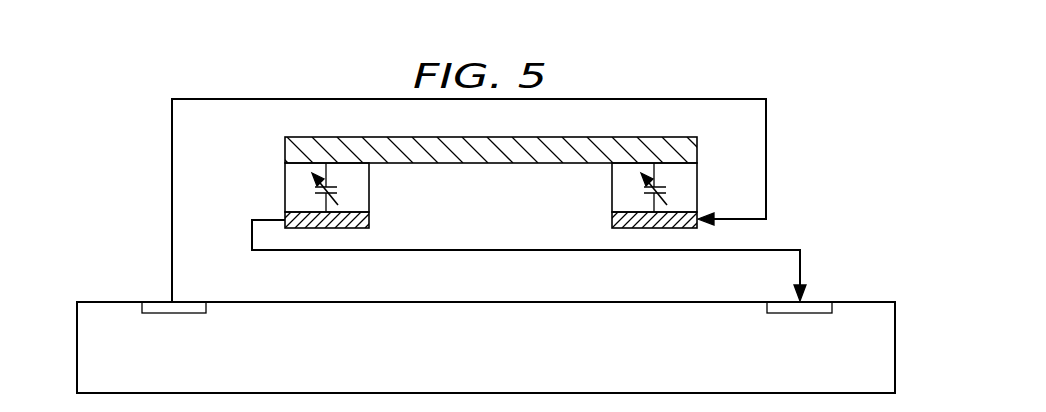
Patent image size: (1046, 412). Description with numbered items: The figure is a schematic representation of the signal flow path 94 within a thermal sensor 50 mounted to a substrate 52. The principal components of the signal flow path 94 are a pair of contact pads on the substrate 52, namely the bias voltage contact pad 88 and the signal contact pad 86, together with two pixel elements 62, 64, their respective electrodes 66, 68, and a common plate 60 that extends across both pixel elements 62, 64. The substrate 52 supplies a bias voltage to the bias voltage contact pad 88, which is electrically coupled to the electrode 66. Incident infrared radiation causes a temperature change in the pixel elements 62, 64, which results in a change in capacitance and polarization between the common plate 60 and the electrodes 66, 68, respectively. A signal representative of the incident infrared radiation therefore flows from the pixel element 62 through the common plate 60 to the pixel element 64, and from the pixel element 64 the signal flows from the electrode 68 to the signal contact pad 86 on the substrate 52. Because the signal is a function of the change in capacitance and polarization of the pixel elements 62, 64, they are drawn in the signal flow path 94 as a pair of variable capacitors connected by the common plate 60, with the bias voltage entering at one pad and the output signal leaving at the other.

The thermal sensor 50 is at (702, 75).
The substrate 52 is at (499, 376).
The common plate 60 is at (698, 148).
The pixel element 62 is at (698, 185).
The pixel element 64 is at (285, 185).
The electrode 66 is at (612, 220).
The electrode 68 is at (370, 222).
The signal contact pad 86 is at (782, 301).
The bias voltage contact pad 88 is at (151, 301).
The signal flow path 94 is at (305, 99).